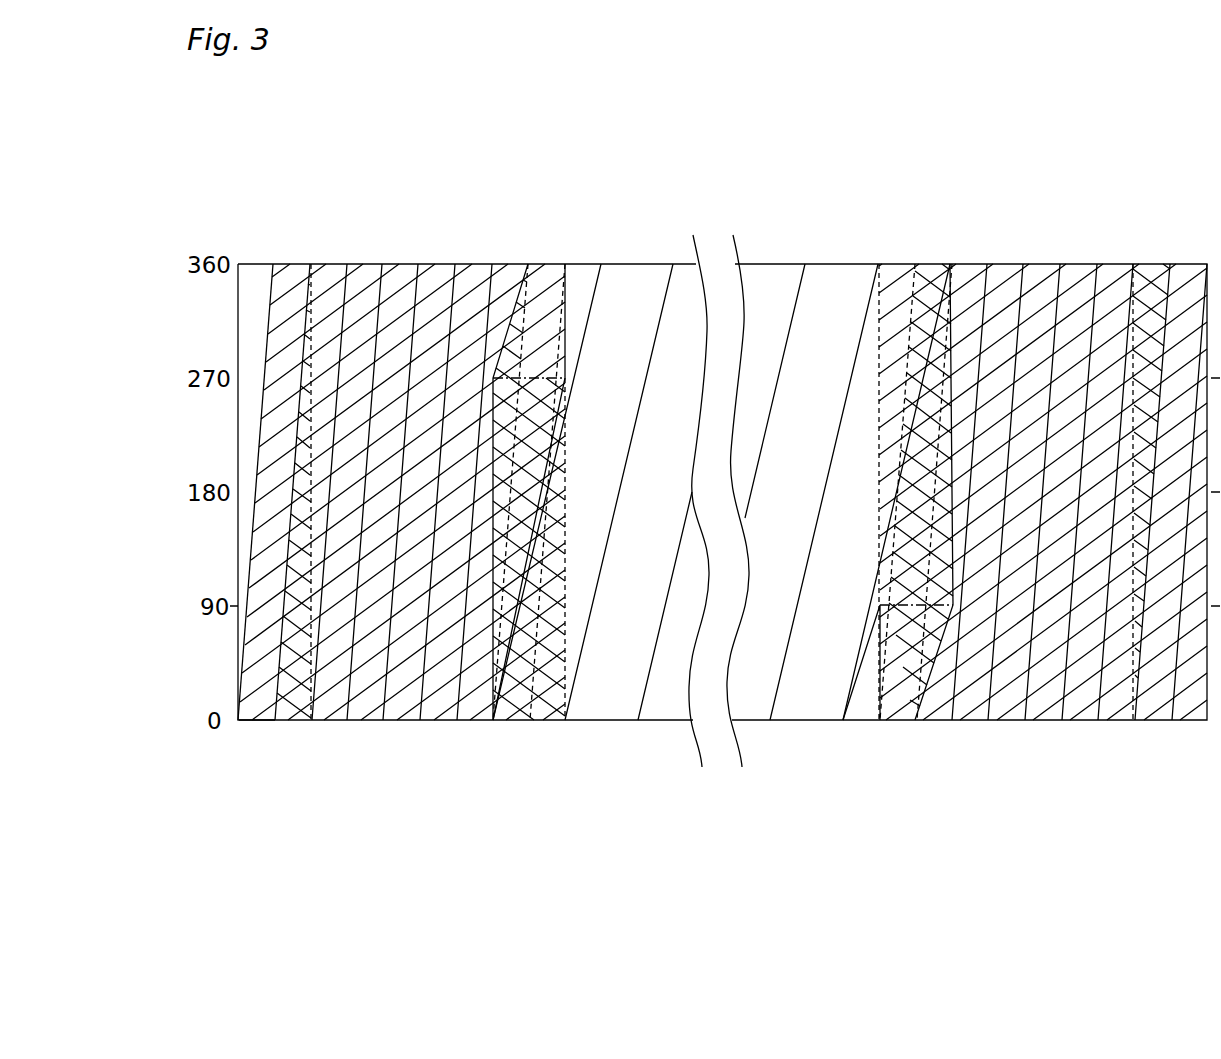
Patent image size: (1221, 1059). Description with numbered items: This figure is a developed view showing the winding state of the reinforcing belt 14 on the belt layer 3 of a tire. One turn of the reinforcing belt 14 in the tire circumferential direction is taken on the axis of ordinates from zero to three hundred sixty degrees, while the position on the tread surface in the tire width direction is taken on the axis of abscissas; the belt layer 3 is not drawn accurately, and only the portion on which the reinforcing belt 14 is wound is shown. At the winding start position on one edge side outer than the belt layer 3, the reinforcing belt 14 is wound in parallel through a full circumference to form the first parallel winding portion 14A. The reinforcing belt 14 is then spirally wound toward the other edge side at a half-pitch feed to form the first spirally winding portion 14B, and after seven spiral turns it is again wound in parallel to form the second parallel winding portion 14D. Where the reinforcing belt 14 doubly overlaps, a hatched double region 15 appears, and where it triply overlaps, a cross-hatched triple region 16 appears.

The belt layer 3 is at (692, 292).
The reinforcing belt 14 is at (625, 288).
The first parallel winding portion 14A is at (252, 275).
The first spirally winding portion 14B is at (292, 268).
The second parallel winding portion 14D is at (550, 704).
The double region 15 is at (258, 702).
The triple region 16 is at (293, 703).